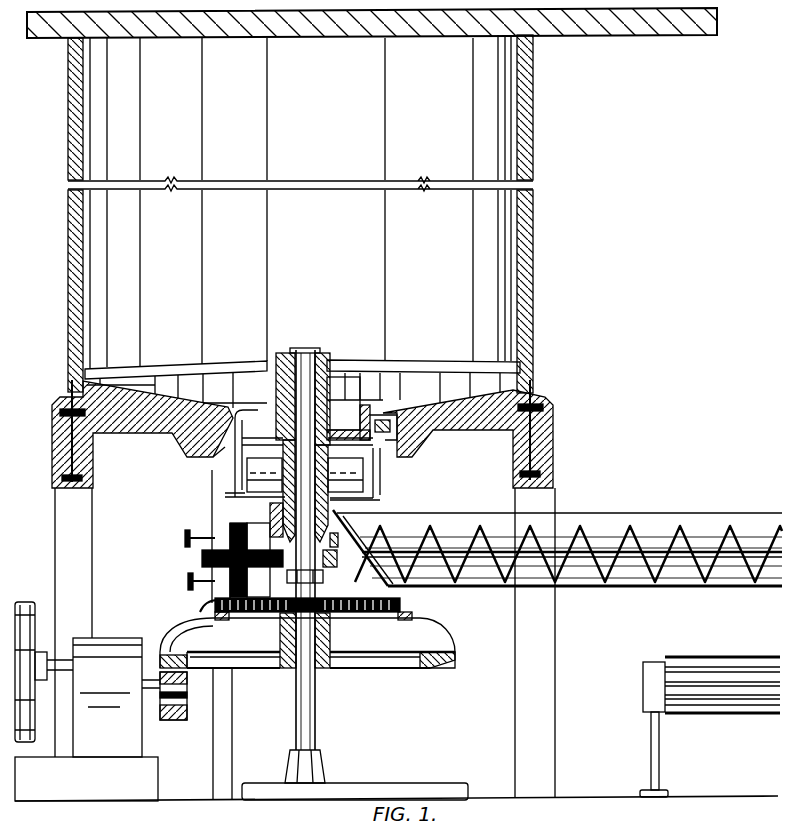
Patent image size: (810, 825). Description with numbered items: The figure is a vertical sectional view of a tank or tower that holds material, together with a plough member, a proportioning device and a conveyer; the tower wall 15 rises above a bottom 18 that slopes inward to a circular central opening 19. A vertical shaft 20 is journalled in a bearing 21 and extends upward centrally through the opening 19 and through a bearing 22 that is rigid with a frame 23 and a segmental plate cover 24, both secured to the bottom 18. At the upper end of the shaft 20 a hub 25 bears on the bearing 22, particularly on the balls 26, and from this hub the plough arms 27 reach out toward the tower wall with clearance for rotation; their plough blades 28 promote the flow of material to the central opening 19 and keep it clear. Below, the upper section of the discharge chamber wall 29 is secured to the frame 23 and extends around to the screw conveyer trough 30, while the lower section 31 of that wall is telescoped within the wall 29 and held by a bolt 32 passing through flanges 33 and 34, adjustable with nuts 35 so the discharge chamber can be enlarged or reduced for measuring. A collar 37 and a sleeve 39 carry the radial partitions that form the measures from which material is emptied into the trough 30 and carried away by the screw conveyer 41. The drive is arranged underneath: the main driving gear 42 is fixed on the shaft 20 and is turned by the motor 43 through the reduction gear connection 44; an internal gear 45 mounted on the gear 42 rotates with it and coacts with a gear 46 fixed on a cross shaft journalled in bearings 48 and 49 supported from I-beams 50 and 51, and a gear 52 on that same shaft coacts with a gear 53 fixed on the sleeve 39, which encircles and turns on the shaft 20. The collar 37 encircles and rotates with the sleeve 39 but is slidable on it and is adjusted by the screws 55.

The drum casing 15 is at (535, 222).
The bottom 18 is at (122, 394).
The central opening 19 is at (336, 410).
The vertical shaft 20 is at (312, 708).
The bearing 21 is at (322, 767).
The bearing 22 is at (279, 420).
The frame 23 is at (368, 406).
The segmental plate cover 24 is at (370, 450).
The hub 25 is at (273, 362).
The balls 26 is at (280, 392).
The plough arms 27 is at (222, 370).
The plough blades 28 is at (182, 383).
The discharge chamber wall upper section 29 is at (195, 442).
The screw conveyer trough 30 is at (484, 588).
The lower section of discharge chamber wall 31 is at (230, 485).
The bolt 32 is at (240, 505).
The flange 33 is at (228, 500).
The flange 34 is at (245, 470).
The nuts 35 is at (268, 492).
The collar 37 is at (355, 514).
The sleeve 39 is at (335, 491).
The screw conveyer 41 is at (592, 524).
The main driving gear 42 is at (448, 661).
The motor 43 is at (26, 603).
The reduction gear connection 44 is at (123, 725).
The internal gear 45 is at (400, 604).
The gear 46 is at (256, 604).
The bearing 48 is at (218, 601).
The bearing 49 is at (205, 568).
The I-beam 50 is at (185, 537).
The I-beam 51 is at (190, 588).
The gear 52 is at (212, 558).
The gear 53 is at (333, 572).
The screws 55 is at (338, 537).